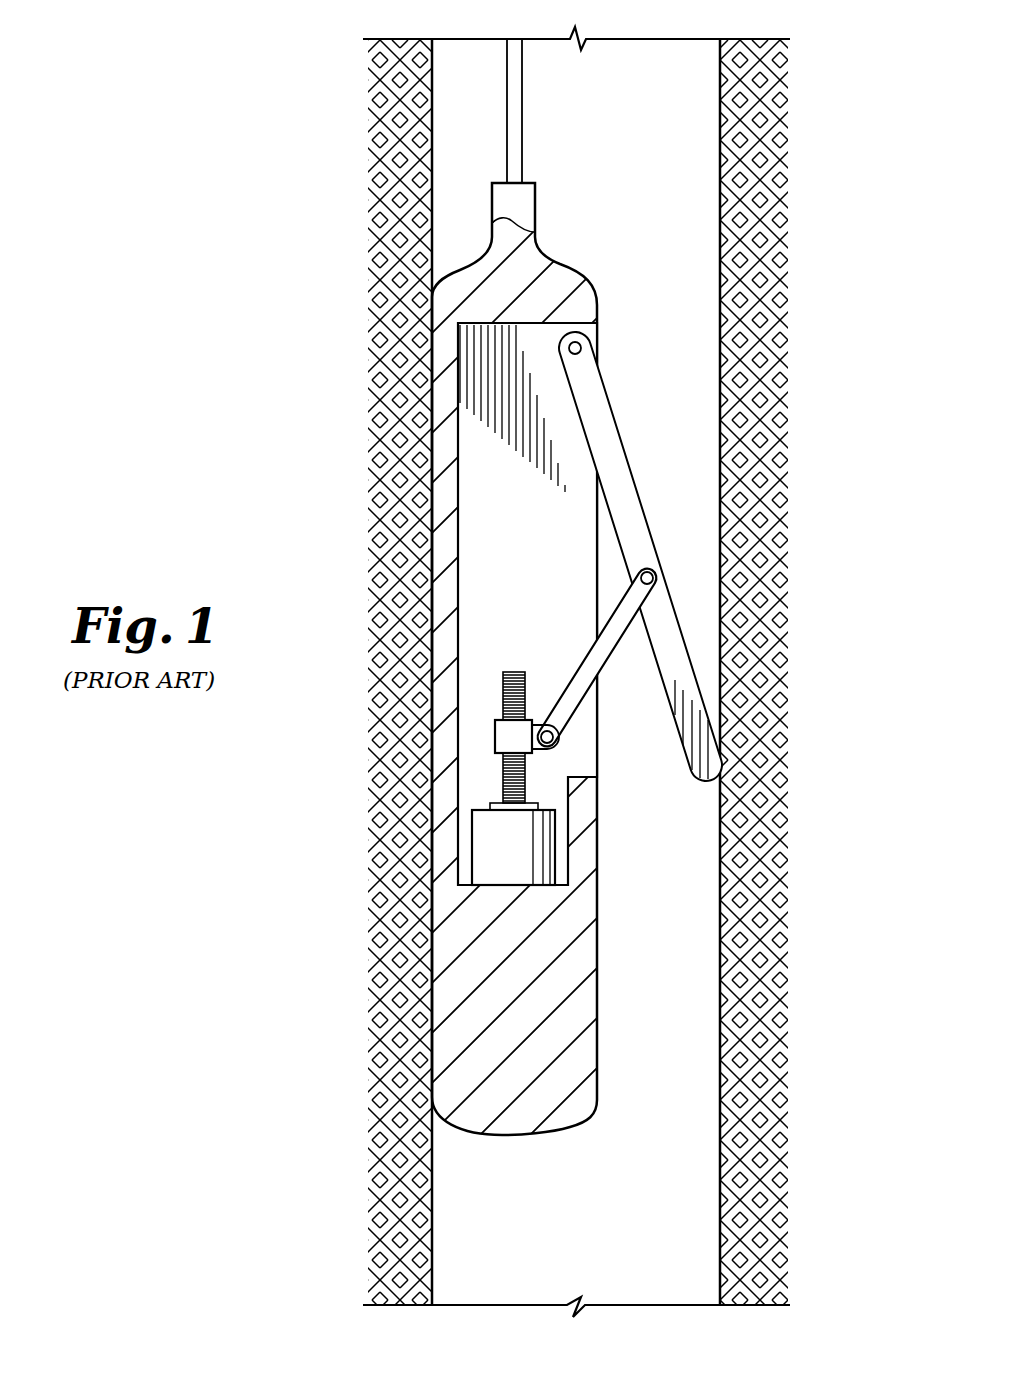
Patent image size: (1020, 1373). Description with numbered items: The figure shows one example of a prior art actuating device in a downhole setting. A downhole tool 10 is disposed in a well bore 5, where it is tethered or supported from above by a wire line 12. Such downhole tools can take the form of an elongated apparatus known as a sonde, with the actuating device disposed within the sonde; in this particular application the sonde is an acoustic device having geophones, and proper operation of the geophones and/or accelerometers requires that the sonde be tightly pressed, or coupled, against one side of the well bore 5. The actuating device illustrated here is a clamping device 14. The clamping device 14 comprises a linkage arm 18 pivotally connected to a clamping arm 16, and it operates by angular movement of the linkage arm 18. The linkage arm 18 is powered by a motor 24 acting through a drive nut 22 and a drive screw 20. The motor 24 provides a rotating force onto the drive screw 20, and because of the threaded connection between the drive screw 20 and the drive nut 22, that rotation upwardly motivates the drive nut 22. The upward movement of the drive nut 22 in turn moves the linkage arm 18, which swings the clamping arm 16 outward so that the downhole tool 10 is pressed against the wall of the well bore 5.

The well bore 5 is at (658, 66).
The downhole tool 10 is at (513, 1186).
The wire line 12 is at (524, 90).
The clamping device 14 is at (516, 574).
The clamping arm 16 is at (623, 473).
The linkage arm 18 is at (608, 645).
The drive screw 20 is at (504, 683).
The drive nut 22 is at (503, 738).
The motor 24 is at (504, 850).